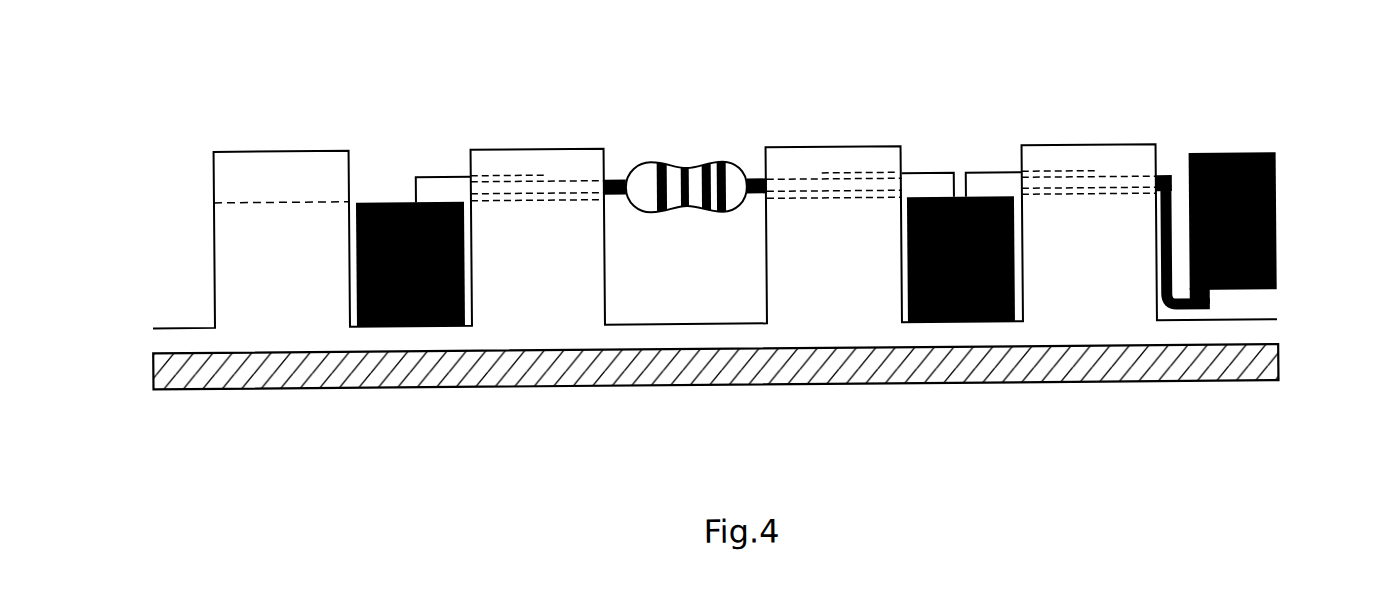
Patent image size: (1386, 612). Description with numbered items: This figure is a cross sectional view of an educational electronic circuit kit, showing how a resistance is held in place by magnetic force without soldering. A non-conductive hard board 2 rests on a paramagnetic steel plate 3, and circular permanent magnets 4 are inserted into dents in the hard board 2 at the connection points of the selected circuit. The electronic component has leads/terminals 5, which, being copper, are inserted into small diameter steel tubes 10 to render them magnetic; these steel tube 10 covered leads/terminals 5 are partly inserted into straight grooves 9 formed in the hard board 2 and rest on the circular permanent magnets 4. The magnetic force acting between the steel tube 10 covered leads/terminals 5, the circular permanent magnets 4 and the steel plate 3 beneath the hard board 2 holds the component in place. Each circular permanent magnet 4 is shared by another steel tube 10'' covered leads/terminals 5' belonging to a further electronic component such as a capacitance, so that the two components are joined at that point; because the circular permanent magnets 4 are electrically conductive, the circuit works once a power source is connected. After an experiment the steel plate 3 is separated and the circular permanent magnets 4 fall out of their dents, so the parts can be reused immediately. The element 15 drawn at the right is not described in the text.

The hard board 2 is at (688, 243).
The steel plate 3 is at (743, 412).
The circular permanent magnet 4 is at (686, 319).
The leads/terminals 5 is at (685, 129).
The leads/terminals 5' is at (1187, 167).
The straight grooves 9 is at (813, 115).
The steel tube 10 is at (665, 116).
The steel tube 10'' is at (985, 117).
The component block 15 is at (1265, 182).